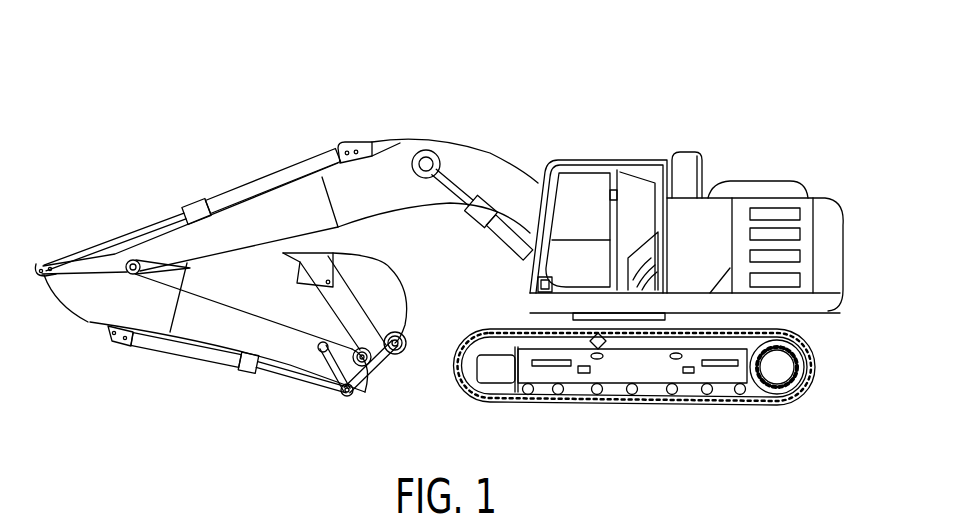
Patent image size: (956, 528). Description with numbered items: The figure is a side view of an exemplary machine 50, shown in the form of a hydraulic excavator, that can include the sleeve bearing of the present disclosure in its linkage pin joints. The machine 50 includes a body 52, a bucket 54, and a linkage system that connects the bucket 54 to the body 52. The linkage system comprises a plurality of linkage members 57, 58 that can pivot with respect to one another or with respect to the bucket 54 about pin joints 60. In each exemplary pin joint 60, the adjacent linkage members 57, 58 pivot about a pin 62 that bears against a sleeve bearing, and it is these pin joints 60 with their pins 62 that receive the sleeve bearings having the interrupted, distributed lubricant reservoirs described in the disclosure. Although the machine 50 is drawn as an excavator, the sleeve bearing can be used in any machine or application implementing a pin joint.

The machine 50 is at (615, 92).
The body 52 is at (707, 210).
The bucket 54 is at (388, 293).
The linkage member 57 is at (258, 217).
The linkage member 58 is at (183, 173).
The pin joint 60 is at (121, 242).
The pin 62 is at (192, 271).